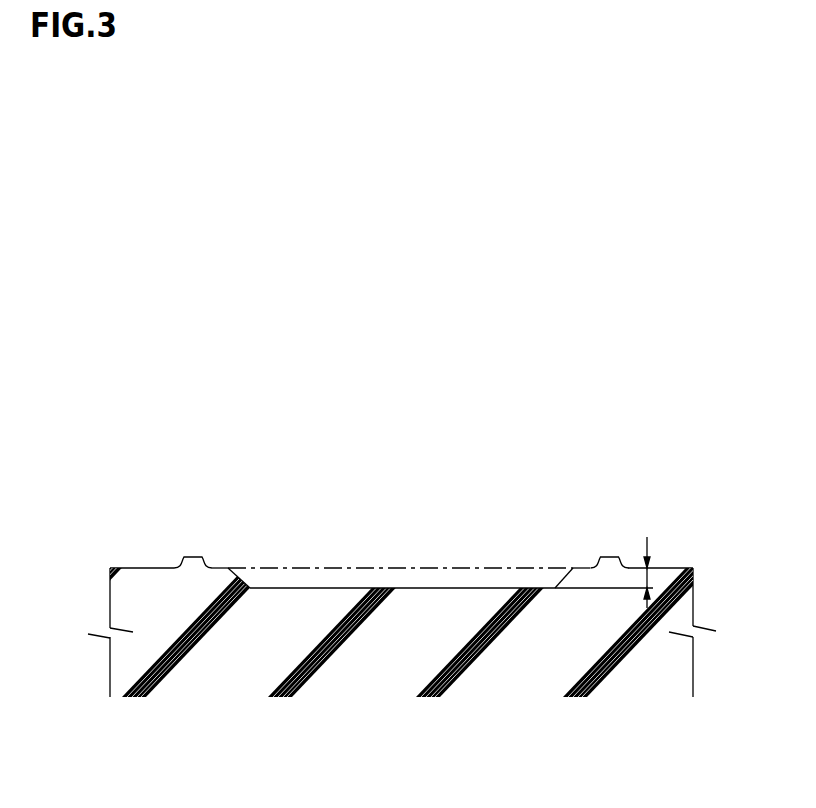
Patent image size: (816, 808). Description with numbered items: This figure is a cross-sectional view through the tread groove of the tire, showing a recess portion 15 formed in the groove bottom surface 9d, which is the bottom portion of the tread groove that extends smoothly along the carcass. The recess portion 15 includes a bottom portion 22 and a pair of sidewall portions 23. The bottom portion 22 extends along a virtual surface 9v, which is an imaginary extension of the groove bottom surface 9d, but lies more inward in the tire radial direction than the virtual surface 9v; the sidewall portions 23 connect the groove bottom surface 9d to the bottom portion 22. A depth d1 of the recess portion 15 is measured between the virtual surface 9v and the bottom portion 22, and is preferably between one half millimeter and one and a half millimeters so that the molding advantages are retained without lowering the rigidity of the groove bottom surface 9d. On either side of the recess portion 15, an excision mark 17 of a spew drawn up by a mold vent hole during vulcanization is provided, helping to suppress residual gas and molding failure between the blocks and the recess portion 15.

The groove bottom surface 9d is at (141, 567).
The excision mark 17 is at (193, 557).
The recess portion 15 is at (512, 462).
The bottom portion 22 is at (397, 589).
The sidewall portion 23 is at (283, 568).
The virtual surface 9v is at (543, 568).
The depth of the recess portions d1 is at (647, 578).